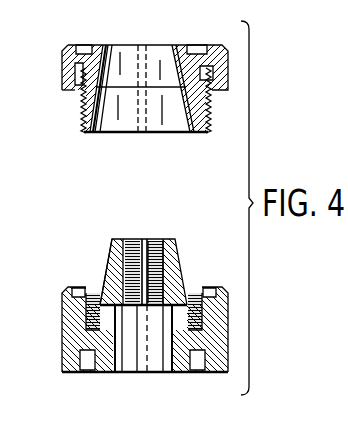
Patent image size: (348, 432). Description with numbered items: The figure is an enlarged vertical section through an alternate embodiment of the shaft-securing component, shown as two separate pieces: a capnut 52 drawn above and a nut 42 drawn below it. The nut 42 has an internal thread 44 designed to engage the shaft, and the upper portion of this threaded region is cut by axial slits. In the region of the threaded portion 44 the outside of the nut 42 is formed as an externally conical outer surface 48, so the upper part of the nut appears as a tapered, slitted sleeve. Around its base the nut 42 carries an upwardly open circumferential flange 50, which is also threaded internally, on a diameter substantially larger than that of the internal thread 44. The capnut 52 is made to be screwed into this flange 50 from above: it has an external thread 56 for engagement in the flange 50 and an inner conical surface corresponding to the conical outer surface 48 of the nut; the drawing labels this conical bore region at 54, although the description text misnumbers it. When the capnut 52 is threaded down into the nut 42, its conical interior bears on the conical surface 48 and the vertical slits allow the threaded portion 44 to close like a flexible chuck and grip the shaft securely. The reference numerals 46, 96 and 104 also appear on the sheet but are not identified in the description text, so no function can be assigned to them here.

The nut 42 is at (212, 372).
The internal thread 44 is at (160, 290).
The collet 46 is at (166, 254).
The externally conical outer surface 48 is at (106, 263).
The circumferential flange 50 is at (63, 312).
The capnut 52 is at (207, 95).
The tapered sleeve 54 is at (120, 133).
The external thread 56 is at (82, 113).
The element 96 is at (335, 7).
The element 104 is at (329, 62).